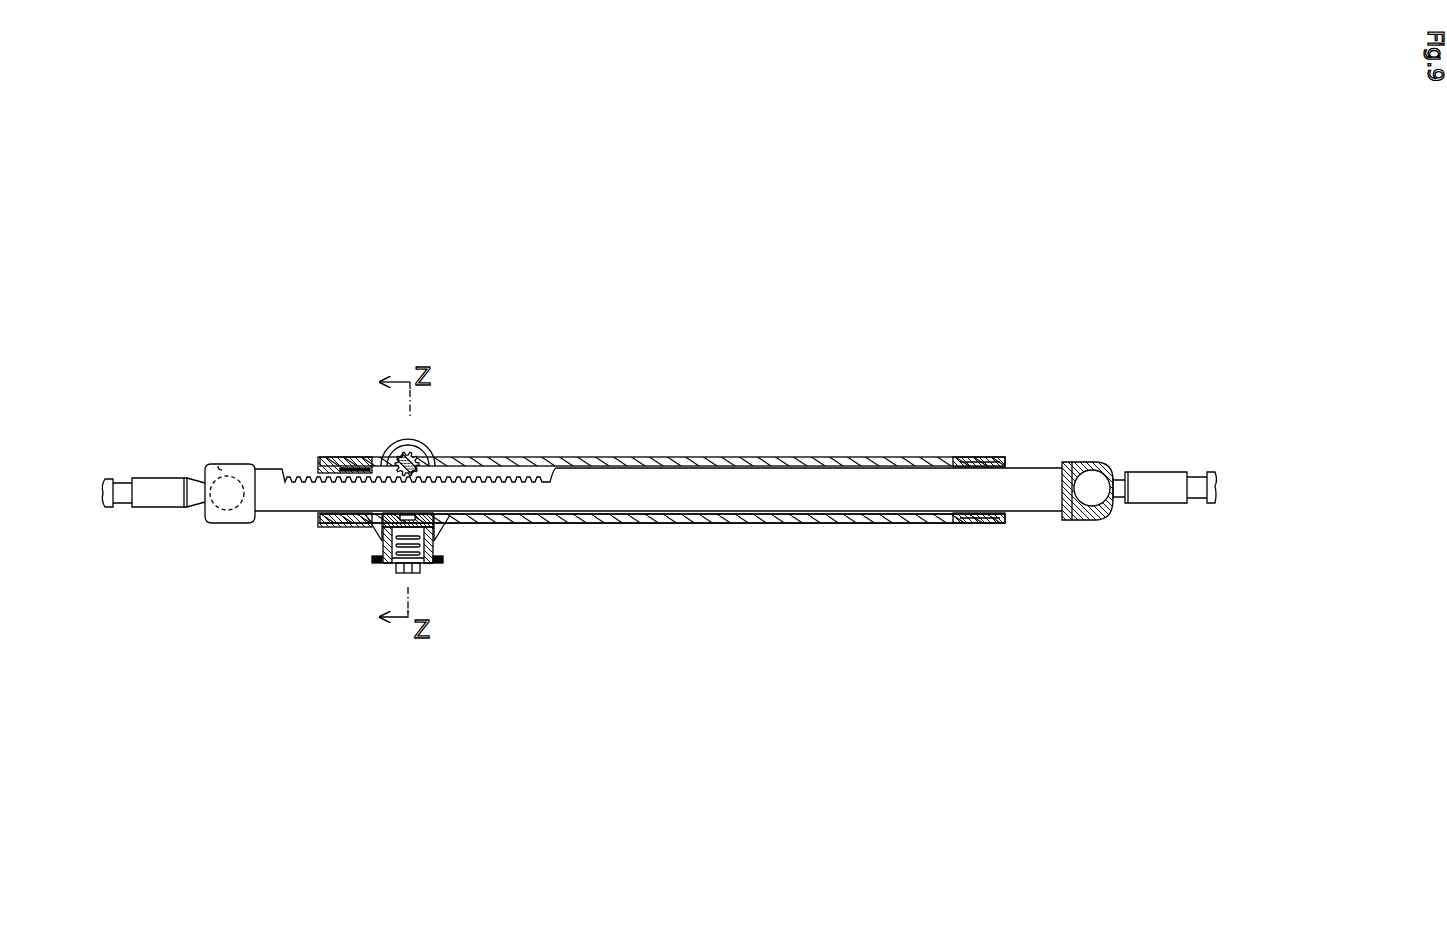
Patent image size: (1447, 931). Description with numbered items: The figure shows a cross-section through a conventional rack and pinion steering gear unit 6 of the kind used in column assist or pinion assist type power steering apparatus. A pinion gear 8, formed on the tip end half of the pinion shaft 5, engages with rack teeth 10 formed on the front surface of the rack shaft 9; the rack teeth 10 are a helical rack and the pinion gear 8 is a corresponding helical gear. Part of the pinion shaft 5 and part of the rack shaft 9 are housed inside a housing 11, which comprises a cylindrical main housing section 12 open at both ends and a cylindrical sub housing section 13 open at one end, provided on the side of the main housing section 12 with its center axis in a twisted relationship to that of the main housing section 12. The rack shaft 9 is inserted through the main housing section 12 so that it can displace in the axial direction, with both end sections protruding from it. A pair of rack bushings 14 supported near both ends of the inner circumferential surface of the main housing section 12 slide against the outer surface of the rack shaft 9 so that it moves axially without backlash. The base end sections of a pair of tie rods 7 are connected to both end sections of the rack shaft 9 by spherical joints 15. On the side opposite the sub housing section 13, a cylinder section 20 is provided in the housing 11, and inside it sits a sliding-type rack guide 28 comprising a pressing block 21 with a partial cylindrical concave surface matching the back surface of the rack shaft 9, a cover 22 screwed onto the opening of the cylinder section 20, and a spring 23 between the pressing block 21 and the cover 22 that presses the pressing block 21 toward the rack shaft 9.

The pinion shaft 5 is at (426, 462).
The steering gear unit 6 is at (546, 452).
The tie rod 7 is at (162, 493).
The pinion gear 8 is at (400, 423).
The rack shaft 9 is at (658, 441).
The rack teeth 10 is at (467, 478).
The housing 11 is at (634, 526).
The main housing section 12 is at (820, 523).
The sub housing section 13 is at (395, 452).
The rack bushing 14 is at (348, 465).
The spherical joint 15 is at (222, 493).
The cylinder section 20 is at (380, 531).
The pressing block 21 is at (382, 541).
The cover 22 is at (394, 564).
The spring 23 is at (424, 566).
The sliding-type rack guide 28 is at (440, 573).